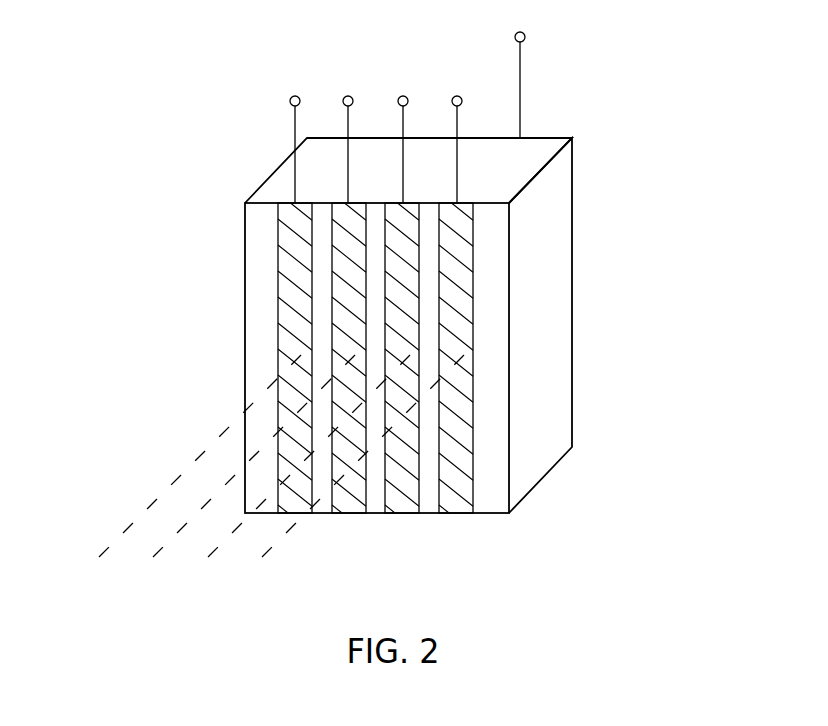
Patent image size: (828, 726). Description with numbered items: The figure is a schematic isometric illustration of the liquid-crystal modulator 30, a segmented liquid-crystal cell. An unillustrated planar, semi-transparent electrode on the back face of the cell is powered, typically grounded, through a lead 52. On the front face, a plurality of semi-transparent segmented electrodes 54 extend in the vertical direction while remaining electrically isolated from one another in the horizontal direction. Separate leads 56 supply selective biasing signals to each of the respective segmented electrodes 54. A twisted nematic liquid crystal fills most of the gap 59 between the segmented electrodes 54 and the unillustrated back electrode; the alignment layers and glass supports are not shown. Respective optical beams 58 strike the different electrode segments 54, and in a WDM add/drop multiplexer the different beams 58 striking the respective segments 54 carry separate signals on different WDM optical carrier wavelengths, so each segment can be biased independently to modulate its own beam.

The liquid-crystal modulator 30 is at (540, 526).
The lead 52 is at (522, 87).
The segmented electrodes 54 is at (465, 467).
The leads 56 is at (454, 120).
The optical beams 58 is at (287, 528).
The gap 59 is at (533, 152).